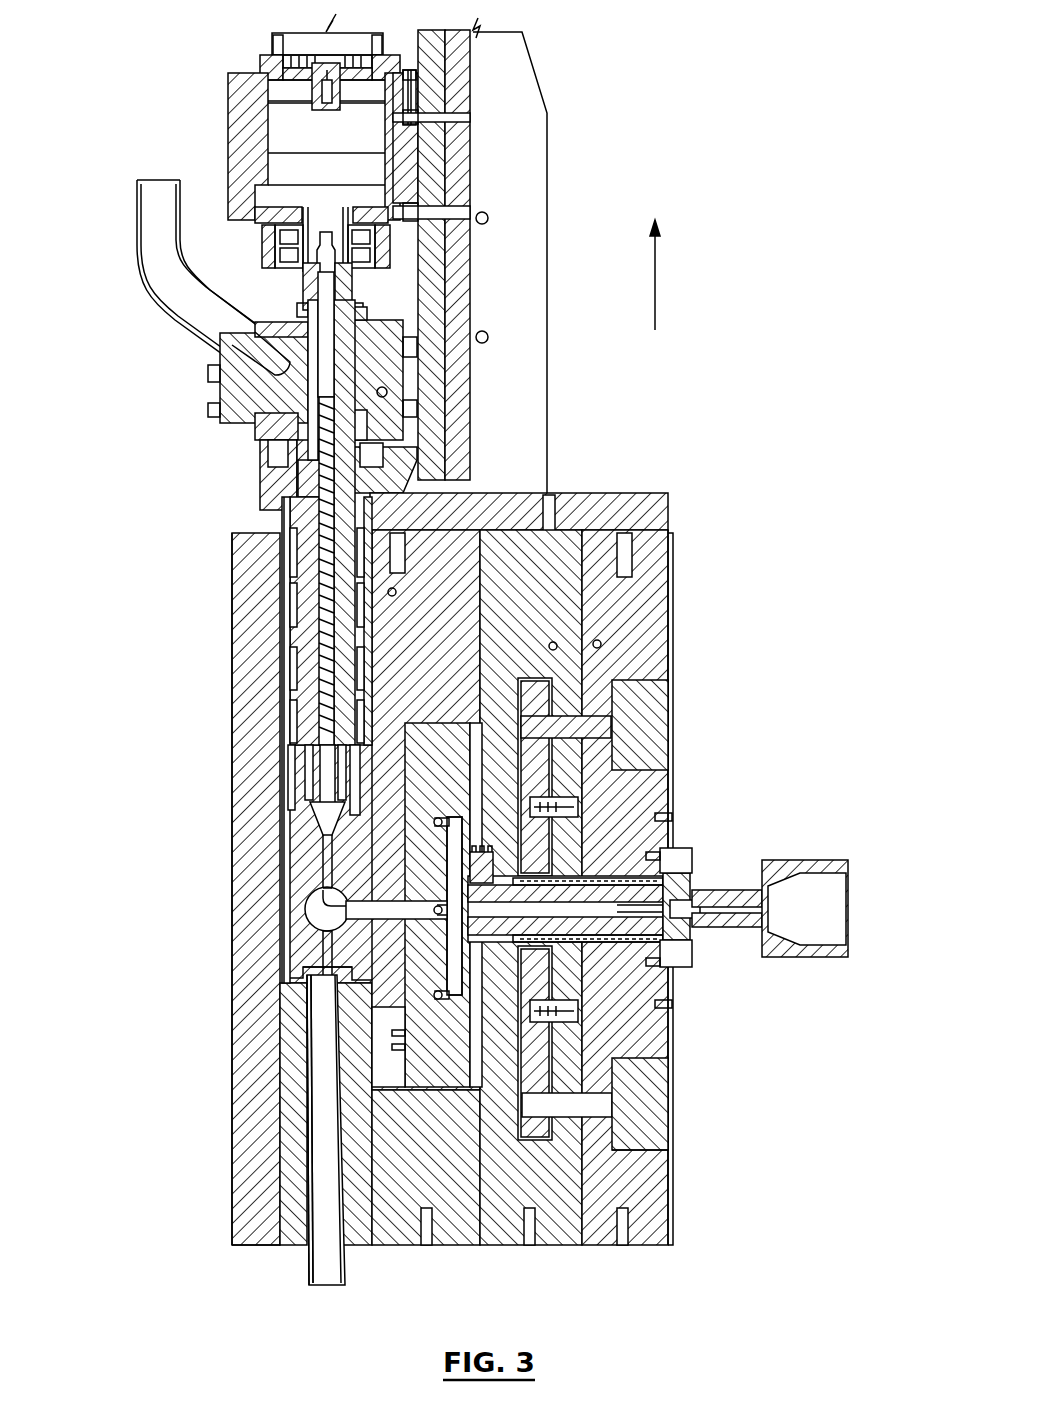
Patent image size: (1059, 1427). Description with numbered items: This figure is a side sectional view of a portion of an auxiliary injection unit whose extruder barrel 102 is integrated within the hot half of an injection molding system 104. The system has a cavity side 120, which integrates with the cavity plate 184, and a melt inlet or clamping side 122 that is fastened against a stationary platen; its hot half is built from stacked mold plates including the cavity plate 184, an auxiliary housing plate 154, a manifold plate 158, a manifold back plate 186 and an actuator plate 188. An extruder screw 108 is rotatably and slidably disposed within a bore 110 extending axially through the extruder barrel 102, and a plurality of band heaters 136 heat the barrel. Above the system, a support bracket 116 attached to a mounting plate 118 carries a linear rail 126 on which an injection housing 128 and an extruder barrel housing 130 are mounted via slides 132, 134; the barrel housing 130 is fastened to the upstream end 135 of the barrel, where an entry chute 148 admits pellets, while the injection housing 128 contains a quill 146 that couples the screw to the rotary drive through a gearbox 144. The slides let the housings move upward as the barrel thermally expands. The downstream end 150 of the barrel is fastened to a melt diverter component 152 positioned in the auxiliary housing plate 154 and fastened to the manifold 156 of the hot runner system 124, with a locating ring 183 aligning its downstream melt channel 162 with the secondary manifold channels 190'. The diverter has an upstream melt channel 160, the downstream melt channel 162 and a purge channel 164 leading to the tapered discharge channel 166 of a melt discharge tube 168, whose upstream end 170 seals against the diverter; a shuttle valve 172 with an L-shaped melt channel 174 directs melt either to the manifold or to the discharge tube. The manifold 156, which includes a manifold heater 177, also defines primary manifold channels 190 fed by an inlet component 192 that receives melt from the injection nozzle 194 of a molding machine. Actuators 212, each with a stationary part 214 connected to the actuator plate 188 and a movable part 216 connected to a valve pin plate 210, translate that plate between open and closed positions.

The extruder barrel 102 is at (300, 485).
The injection molding system 104 is at (748, 522).
The extruder screw 108 is at (308, 525).
The bore 110 is at (322, 560).
The support bracket 116 is at (517, 65).
The mounting plate 118 is at (636, 512).
The cavity side 120 is at (242, 640).
The clamping side 122 is at (675, 605).
The hot runner system 124 is at (498, 750).
The linear rail 126 is at (452, 262).
The injection housing 128 is at (236, 100).
The extruder barrel housing 130 is at (292, 362).
The slide 132 is at (440, 137).
The slide 134 is at (412, 322).
The upstream end 135 is at (372, 392).
The band heaters 136 is at (292, 600).
The gearbox 144 is at (440, 172).
The quill 146 is at (400, 242).
The entry chute 148 is at (142, 205).
The downstream end 150 is at (292, 792).
The melt diverter component 152 is at (292, 958).
The auxiliary housing plate 154 is at (290, 1222).
The manifold 156 is at (428, 1090).
The manifold plate 158 is at (392, 1235).
The upstream melt channel 160 is at (322, 852).
The downstream melt channel 162 is at (350, 895).
The purge channel 164 is at (312, 920).
The tapered discharge channel 166 is at (307, 1060).
The melt discharge tube 168 is at (310, 1075).
The upstream end 170 is at (300, 980).
The shuttle valve 172 is at (330, 915).
The L-shaped melt channel 174 is at (312, 905).
The manifold heater 177 is at (452, 746).
The locating ring 183 is at (430, 950).
The cavity plate 184 is at (242, 690).
The manifold back plate 186 is at (512, 1232).
The actuator plate 188 is at (652, 1240).
The primary manifold channels 190 is at (584, 880).
The secondary manifold channels 190' is at (437, 878).
The inlet component 192 is at (645, 980).
The injection nozzle 194 is at (735, 862).
The valve pin plate 210 is at (540, 760).
The actuators 212 is at (630, 1162).
The stationary part 214 is at (660, 1120).
The movable part 216 is at (582, 1110).